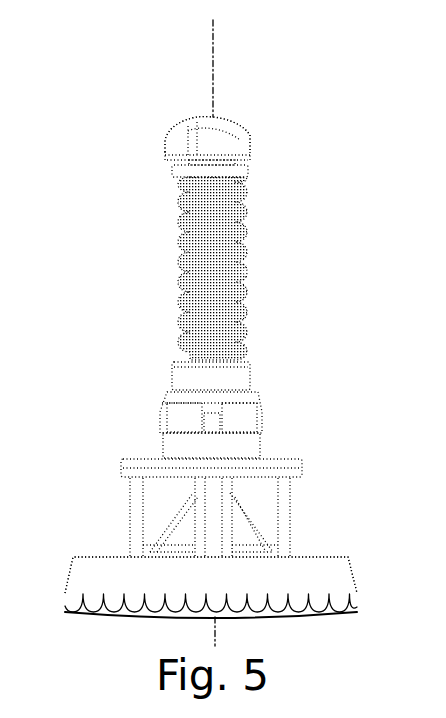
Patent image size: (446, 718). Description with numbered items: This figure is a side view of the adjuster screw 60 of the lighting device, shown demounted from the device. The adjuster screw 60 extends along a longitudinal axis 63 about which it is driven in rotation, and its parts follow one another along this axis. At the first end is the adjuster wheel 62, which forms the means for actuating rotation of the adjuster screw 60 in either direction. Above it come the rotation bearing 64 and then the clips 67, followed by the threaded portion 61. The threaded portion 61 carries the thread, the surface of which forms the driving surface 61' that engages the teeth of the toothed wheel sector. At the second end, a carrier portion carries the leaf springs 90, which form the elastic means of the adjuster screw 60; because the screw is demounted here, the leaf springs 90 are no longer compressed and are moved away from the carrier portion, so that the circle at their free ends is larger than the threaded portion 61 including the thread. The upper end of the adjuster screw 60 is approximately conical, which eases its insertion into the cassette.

The adjuster screw 60 is at (295, 107).
The longitudinal axis 63 is at (213, 70).
The leaf springs 90 is at (230, 144).
The threaded portion 61 is at (280, 277).
The driving surface 61' is at (145, 316).
The clips 67 is at (248, 418).
The rotation bearing 64 is at (282, 462).
The adjuster wheel 62 is at (320, 575).